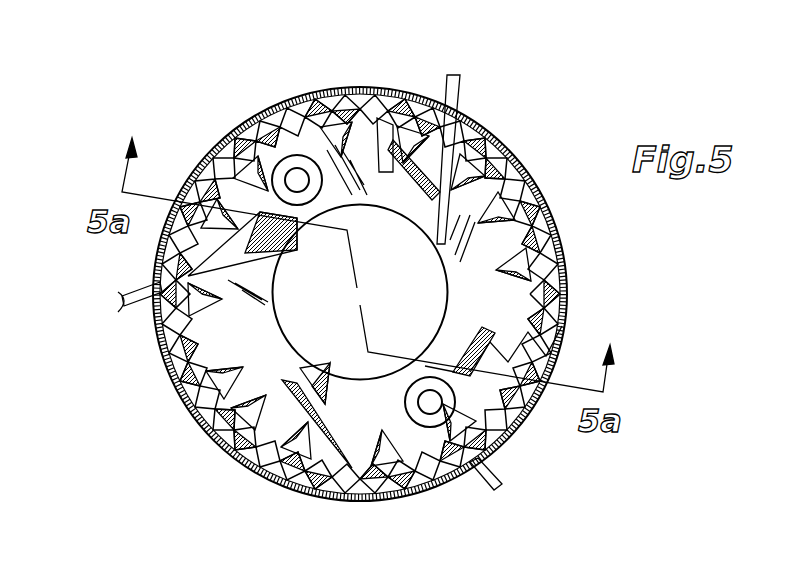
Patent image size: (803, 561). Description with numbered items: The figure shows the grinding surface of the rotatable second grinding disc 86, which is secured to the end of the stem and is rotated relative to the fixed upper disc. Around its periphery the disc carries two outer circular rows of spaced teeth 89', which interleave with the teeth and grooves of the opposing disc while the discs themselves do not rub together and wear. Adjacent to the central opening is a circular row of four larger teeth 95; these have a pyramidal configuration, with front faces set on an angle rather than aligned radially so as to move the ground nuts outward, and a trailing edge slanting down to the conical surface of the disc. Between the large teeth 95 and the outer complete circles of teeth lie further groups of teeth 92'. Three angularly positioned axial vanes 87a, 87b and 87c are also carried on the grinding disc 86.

The second grinding disc 86 is at (540, 160).
The axial vane 87a is at (462, 82).
The axial vane 87b is at (133, 316).
The axial vane 87c is at (500, 482).
The outer circular rows of spaced teeth 89' is at (397, 294).
The group of teeth 92' is at (360, 292).
The circular row of four teeth 95 is at (290, 238).